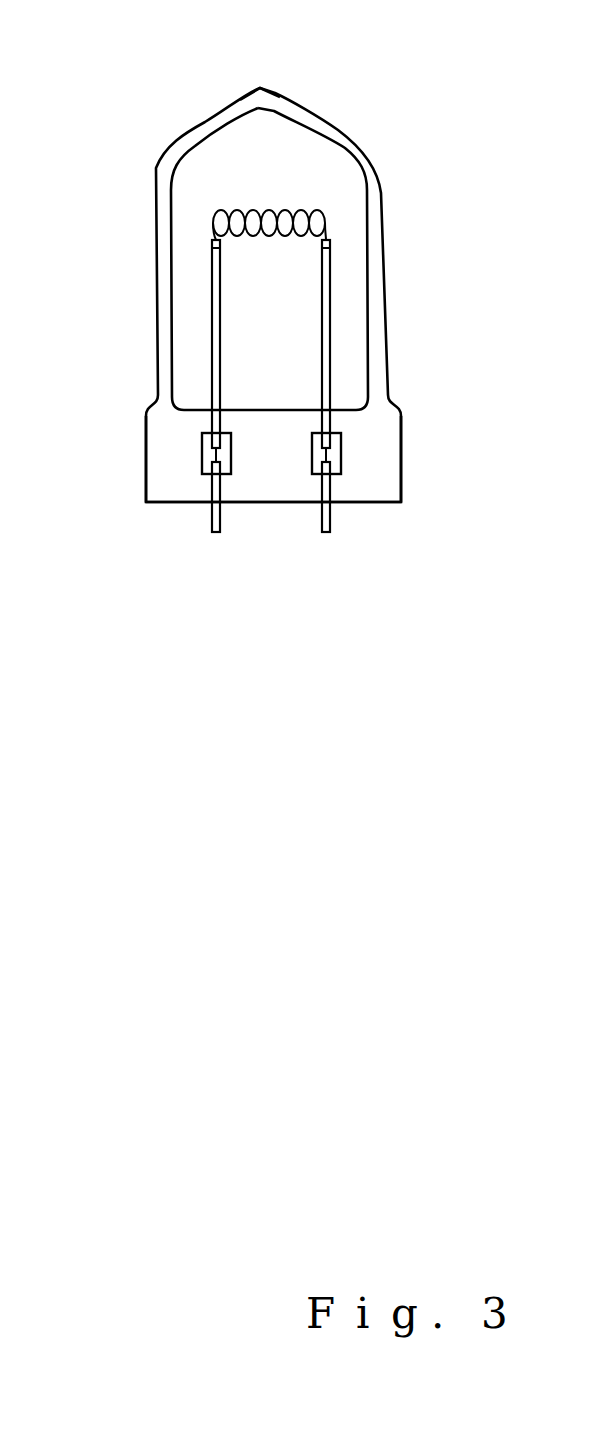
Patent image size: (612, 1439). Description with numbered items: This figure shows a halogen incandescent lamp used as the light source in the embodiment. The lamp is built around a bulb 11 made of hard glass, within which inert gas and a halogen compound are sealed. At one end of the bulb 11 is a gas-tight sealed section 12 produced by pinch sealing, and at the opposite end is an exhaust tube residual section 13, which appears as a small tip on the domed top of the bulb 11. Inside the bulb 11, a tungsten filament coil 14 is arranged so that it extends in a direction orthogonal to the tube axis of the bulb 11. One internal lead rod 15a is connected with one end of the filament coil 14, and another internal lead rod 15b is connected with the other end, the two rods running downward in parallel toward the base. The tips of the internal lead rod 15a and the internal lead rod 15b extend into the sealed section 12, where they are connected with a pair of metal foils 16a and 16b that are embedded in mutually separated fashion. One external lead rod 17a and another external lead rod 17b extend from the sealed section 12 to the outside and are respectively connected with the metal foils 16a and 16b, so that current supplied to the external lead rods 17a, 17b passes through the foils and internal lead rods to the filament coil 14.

The bulb 11 is at (386, 265).
The sealed section 12 is at (386, 478).
The exhaust tube residual section 13 is at (260, 88).
The tungsten filament coil 14 is at (268, 210).
The internal lead rod 15a is at (322, 323).
The internal lead rod 15b is at (221, 291).
The metal foil 16a is at (343, 448).
The metal foil 16b is at (203, 450).
The external lead rod 17a is at (337, 517).
The external lead rod 17b is at (213, 523).